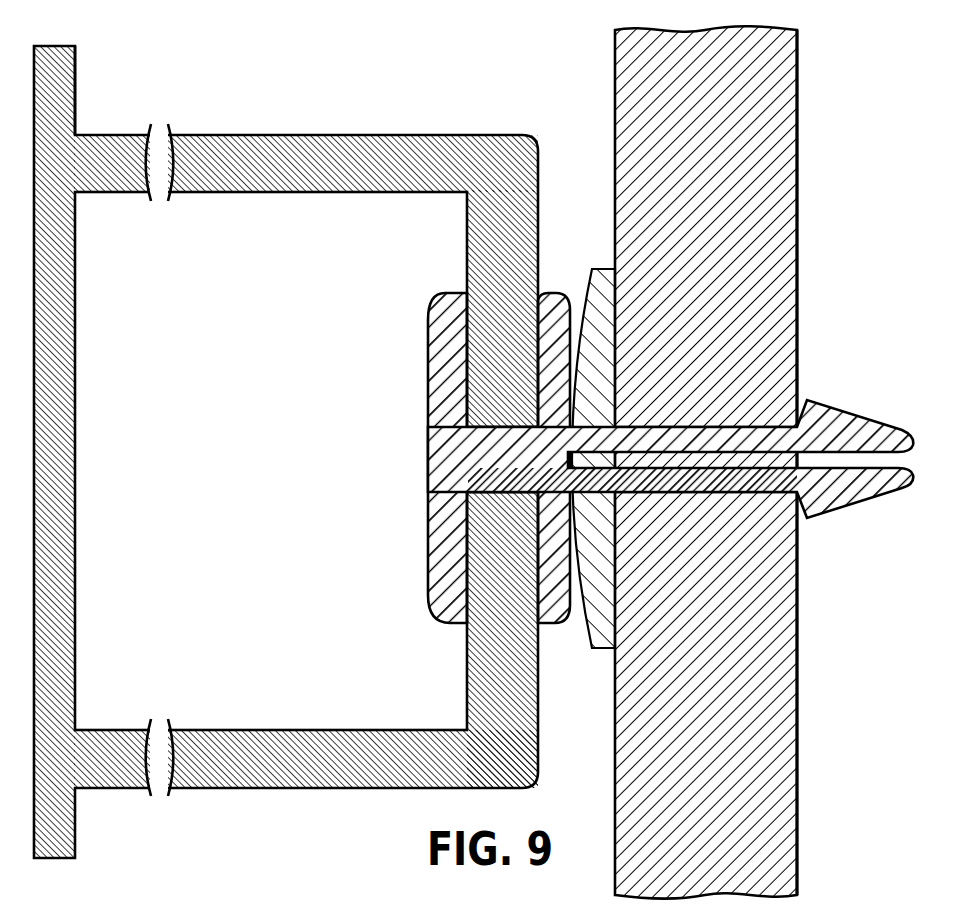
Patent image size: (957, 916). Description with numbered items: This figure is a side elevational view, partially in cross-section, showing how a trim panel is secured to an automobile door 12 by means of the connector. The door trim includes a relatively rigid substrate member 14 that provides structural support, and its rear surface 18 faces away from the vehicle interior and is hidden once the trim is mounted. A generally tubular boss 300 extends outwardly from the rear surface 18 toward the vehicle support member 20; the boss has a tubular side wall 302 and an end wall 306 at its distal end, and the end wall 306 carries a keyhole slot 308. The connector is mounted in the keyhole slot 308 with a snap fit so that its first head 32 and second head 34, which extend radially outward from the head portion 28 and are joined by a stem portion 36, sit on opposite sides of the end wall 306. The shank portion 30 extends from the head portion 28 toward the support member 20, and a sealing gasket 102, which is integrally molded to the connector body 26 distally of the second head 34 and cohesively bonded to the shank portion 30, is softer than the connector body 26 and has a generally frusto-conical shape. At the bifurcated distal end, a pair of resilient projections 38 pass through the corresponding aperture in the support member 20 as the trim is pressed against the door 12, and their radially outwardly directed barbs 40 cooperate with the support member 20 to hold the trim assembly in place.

The automobile door 12 is at (818, 120).
The substrate member 14 is at (82, 57).
The rear surface 18 is at (75, 108).
The vehicle support member 20 is at (790, 183).
The connector body 26 is at (690, 500).
The head portion 28 is at (634, 444).
The shank portion 30 is at (723, 500).
The first head 32 is at (442, 322).
The second head 34 is at (555, 294).
The stem portion 36 is at (448, 459).
The projections 38 is at (798, 398).
The barbs 40 is at (812, 400).
The sealing gasket 102 is at (600, 270).
The tubular boss 300 is at (440, 134).
The tubular side wall 302 is at (300, 148).
The end wall 306 is at (540, 206).
The keyhole slot 308 is at (460, 445).